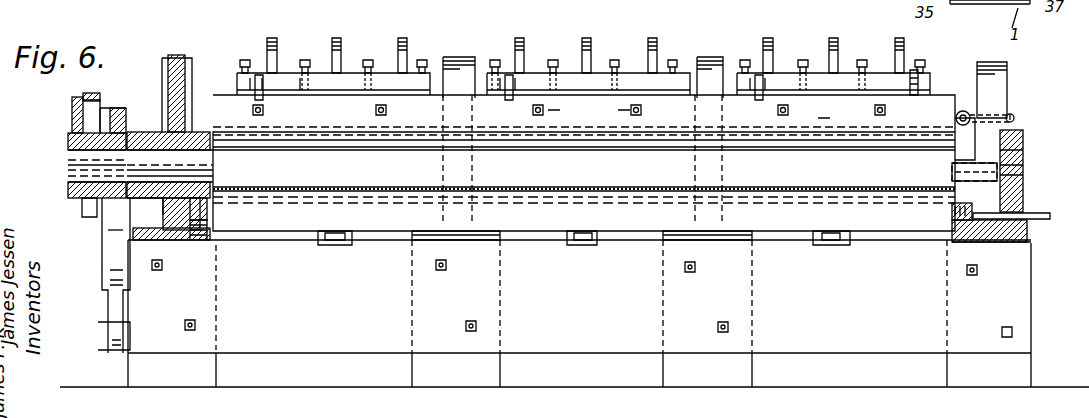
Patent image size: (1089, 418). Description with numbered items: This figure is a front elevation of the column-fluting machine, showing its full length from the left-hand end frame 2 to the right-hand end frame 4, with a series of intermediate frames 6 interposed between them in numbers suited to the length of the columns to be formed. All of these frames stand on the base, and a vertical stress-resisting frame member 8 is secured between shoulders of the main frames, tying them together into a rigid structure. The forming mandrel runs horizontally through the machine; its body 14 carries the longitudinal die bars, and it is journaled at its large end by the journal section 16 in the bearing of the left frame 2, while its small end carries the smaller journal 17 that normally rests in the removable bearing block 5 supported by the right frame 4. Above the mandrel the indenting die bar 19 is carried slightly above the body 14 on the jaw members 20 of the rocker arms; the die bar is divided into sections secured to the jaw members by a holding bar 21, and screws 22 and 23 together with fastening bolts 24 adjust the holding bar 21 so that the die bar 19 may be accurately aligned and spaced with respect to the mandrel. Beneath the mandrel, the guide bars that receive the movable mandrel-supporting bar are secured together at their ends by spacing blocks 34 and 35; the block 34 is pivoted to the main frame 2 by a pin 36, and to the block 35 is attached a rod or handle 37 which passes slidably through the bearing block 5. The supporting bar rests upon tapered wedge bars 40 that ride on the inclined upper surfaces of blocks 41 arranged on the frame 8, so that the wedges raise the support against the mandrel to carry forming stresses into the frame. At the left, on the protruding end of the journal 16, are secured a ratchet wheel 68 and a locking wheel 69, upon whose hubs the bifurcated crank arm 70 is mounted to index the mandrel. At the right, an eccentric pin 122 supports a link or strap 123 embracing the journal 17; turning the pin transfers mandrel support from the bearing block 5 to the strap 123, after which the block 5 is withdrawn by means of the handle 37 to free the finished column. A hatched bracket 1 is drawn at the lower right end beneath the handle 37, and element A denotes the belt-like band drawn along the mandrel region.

The bracket 1 is at (1000, 238).
The left-hand end frame 2 is at (183, 58).
The right-hand end frame 4 is at (1007, 80).
The removable bearing block 5 is at (1023, 193).
The intermediate frames 6 is at (460, 57).
The vertical stress-resisting frame member 8 is at (593, 343).
The mandrel body 14 is at (584, 181).
The journal section 16 is at (143, 160).
The smaller journal 17 is at (985, 170).
The indenting die bar 19 is at (652, 137).
The jaw members 20 is at (385, 42).
The holding bar 21 is at (950, 80).
The screws 22 is at (305, 60).
The screws 23 is at (913, 70).
The fastening bolts 24 is at (699, 114).
The spacing block 34 is at (195, 228).
The spacing block 35 is at (955, 240).
The pin 36 is at (207, 210).
The rod or handle 37 is at (1045, 219).
The tapered wedge bars 40 is at (340, 245).
The blocks 41 is at (320, 245).
The ratchet wheel 68 is at (88, 220).
The locking wheel 69 is at (118, 108).
The bifurcated crank arm 70 is at (72, 112).
The eccentric pin 122 is at (963, 110).
The link or strap 123 is at (963, 140).
The belt A is at (540, 185).